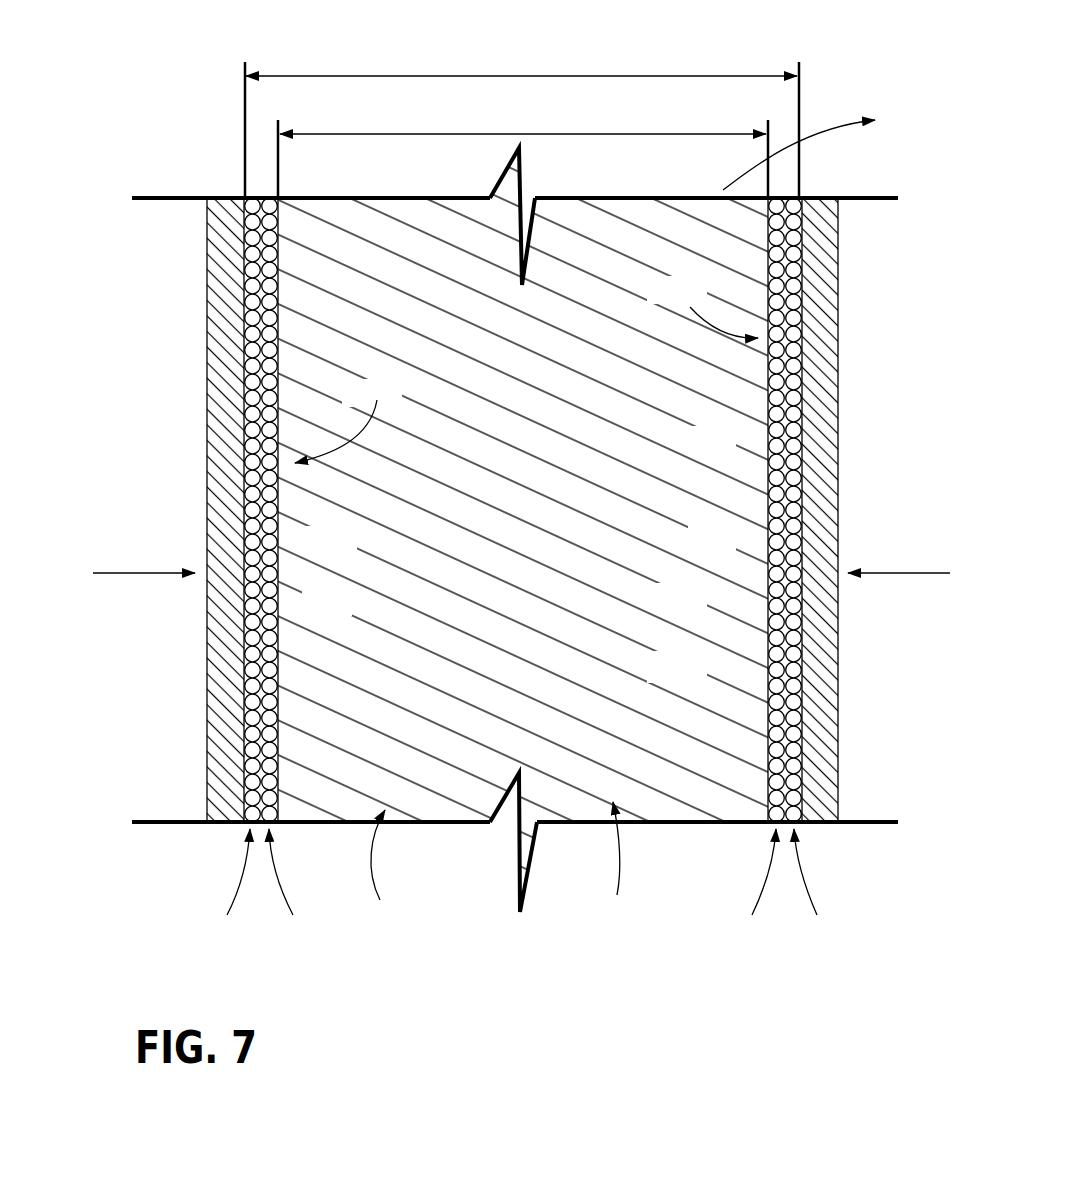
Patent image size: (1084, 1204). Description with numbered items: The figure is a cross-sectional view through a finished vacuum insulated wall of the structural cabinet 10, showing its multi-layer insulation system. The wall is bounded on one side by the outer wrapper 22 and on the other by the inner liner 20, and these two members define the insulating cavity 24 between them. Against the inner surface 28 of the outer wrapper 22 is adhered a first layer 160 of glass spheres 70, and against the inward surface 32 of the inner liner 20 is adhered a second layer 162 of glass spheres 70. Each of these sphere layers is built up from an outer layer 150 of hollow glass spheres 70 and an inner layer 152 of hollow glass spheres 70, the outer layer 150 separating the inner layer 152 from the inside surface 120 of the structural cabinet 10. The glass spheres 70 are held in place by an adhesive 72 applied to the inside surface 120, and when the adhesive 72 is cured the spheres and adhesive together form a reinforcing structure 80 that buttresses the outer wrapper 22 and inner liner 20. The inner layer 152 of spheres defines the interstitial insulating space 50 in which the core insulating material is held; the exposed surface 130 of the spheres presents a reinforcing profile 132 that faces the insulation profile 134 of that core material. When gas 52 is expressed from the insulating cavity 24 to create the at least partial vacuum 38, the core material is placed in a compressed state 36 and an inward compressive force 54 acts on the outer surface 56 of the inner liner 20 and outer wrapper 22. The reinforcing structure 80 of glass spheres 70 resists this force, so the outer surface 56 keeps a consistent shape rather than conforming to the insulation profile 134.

The structural cabinet 10 is at (127, 230).
The inner liner 20 is at (821, 340).
The outer wrapper 22 is at (227, 468).
The insulating cavity 24 is at (513, 75).
The inner surface 28 is at (247, 386).
The inward surface 32 is at (795, 425).
The compressed state 36 is at (386, 870).
The at least partial vacuum 38 is at (619, 864).
The interstitial insulating space 50 is at (502, 132).
The gas 52 is at (824, 120).
The inward compressive force 54 is at (143, 573).
The outer surface 56 is at (208, 625).
The glass spheres 70 is at (793, 513).
The adhesive 72 is at (783, 583).
The reinforcing structure 80 is at (778, 192).
The inside surface 120 is at (800, 690).
The exposed surface 130 is at (768, 620).
The reinforcing profile 132 is at (767, 750).
The insulation profile 134 is at (777, 253).
The outer layer 150 is at (506, 889).
The inner layer 152 is at (522, 889).
The first layer 160 is at (344, 422).
The second layer 162 is at (707, 308).